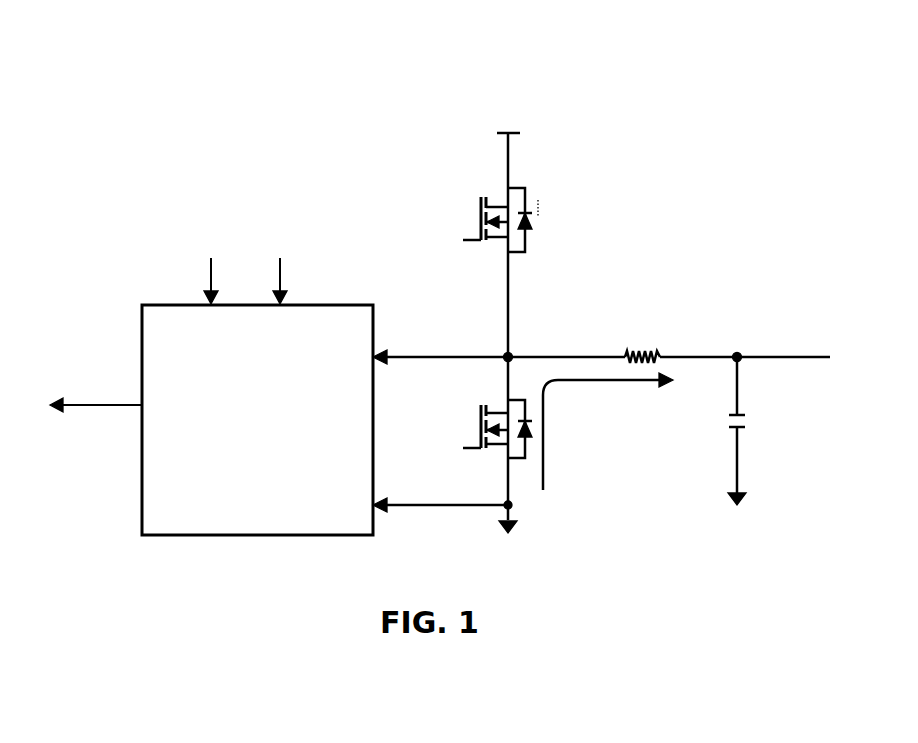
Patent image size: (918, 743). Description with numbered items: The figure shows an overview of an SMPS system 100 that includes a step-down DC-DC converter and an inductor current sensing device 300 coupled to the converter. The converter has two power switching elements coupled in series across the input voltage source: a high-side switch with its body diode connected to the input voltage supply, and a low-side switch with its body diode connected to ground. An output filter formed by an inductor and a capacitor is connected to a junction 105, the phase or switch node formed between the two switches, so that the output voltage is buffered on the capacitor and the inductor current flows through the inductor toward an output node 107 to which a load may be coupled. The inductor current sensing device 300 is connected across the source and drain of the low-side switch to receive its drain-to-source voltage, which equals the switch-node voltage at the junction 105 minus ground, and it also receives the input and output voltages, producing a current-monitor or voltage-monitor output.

The SMPS system 100 is at (197, 80).
The junction 105 is at (511, 353).
The output node 107 is at (737, 355).
The inductor current sensing device 300 is at (257, 420).